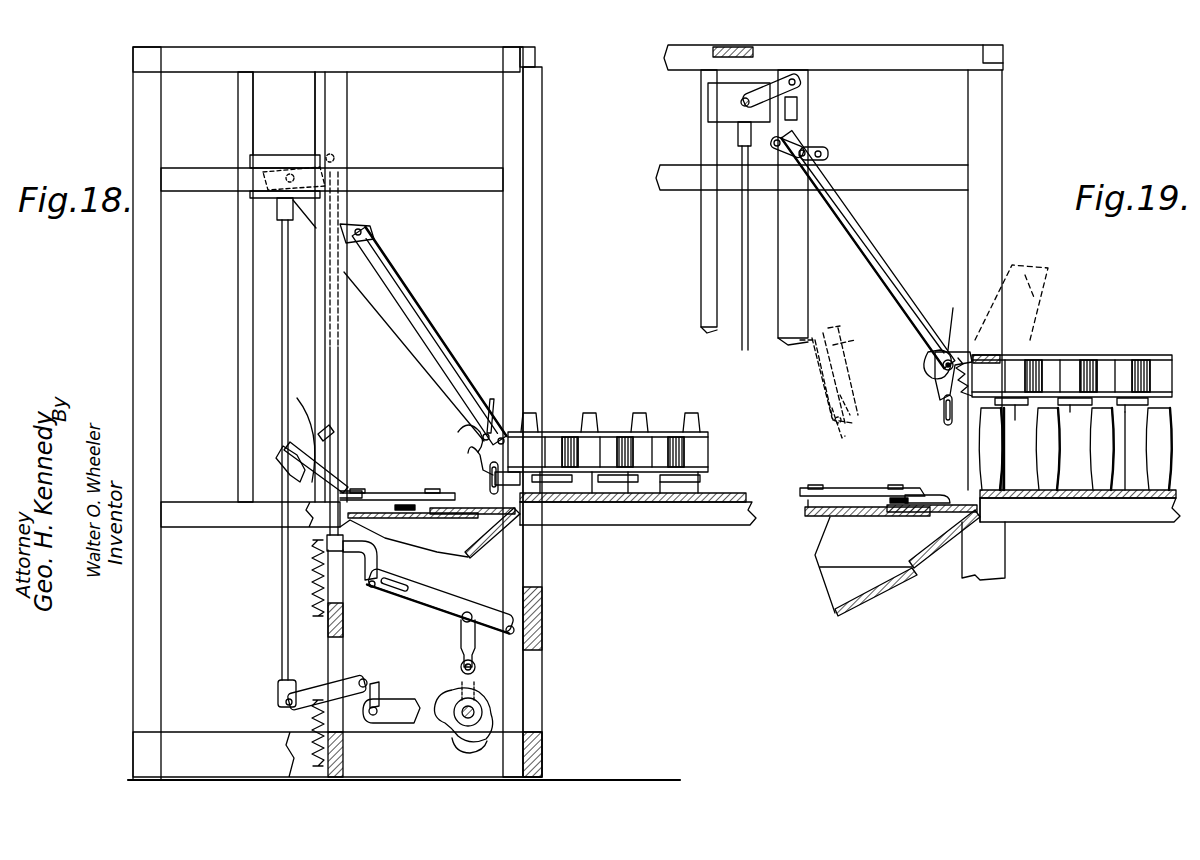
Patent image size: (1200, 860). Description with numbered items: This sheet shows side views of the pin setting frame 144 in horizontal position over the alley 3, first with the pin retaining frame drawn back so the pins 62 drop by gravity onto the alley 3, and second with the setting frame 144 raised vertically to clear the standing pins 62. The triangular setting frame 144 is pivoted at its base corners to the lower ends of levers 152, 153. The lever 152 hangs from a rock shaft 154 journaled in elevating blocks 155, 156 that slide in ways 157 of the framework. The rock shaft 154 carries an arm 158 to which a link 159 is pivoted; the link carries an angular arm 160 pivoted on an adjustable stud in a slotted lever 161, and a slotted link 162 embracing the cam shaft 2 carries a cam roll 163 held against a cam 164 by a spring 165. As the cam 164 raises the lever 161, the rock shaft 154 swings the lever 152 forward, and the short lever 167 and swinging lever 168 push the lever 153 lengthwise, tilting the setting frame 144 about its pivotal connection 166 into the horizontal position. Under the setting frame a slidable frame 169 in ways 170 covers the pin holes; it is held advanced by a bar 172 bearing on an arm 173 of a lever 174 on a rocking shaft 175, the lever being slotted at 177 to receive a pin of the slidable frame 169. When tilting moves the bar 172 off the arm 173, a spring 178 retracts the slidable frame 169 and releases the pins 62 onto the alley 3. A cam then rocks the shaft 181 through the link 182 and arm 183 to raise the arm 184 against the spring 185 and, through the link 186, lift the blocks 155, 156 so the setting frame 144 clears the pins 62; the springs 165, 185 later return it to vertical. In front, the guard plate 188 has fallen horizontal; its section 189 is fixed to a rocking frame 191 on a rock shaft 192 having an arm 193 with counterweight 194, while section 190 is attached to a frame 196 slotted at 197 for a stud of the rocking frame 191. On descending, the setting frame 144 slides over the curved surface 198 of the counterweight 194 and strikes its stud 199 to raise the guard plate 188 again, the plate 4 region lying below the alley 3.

In FIG. 18, the cam shaft 2 is at (482, 712).
In FIG. 18, the alley 3 is at (722, 495).
In FIG. 19, the alley 3 is at (1022, 490).
In FIG. 18, the chute plate 4 is at (478, 558).
In FIG. 19, the chute plate 4 is at (890, 580).
In FIG. 18, the pins 62 is at (594, 413).
In FIG. 19, the pins 62 is at (1060, 425).
In FIG. 18, the setting frame 144 is at (548, 431).
In FIG. 19, the setting frame 144 is at (1040, 285).
In FIG. 18, the lever 152 is at (392, 322).
In FIG. 19, the lever 152 is at (858, 268).
In FIG. 18, the lever 153 is at (432, 332).
In FIG. 19, the lever 153 is at (898, 232).
In FIG. 19, the rock shaft 154 is at (718, 112).
In FIG. 18, the elevating block 155 is at (258, 162).
In FIG. 19, the elevating block 156 is at (725, 85).
In FIG. 18, the ways 157 is at (316, 105).
In FIG. 19, the ways 157 is at (701, 240).
In FIG. 18, the arm 158 is at (338, 156).
In FIG. 19, the arm 158 is at (785, 85).
In FIG. 18, the link 159 is at (342, 212).
In FIG. 19, the link 159 is at (798, 114).
In FIG. 18, the angular arm 160 is at (372, 561).
In FIG. 18, the slotted lever 161 is at (432, 605).
In FIG. 18, the slotted link 162 is at (463, 645).
In FIG. 18, the cam roll 163 is at (461, 667).
In FIG. 18, the cam 164 is at (490, 690).
In FIG. 18, the spring 165 is at (312, 582).
In FIG. 18, the pivotal connection 166 is at (493, 400).
In FIG. 19, the pivotal connection 166 is at (840, 430).
In FIG. 19, the short lever 167 is at (830, 155).
In FIG. 19, the swinging lever 168 is at (808, 146).
In FIG. 18, the slidable frame 169 is at (660, 485).
In FIG. 19, the slidable frame 169 is at (1126, 420).
In FIG. 18, the ways 170 is at (612, 482).
In FIG. 19, the ways 170 is at (1015, 412).
In FIG. 19, the bar 172 is at (975, 352).
In FIG. 18, the arm 173 is at (465, 432).
In FIG. 19, the arm 173 is at (942, 378).
In FIG. 18, the lever 174 is at (468, 453).
In FIG. 19, the lever 174 is at (950, 400).
In FIG. 19, the rocking shaft 175 is at (950, 312).
In FIG. 19, the slot 177 is at (949, 425).
In FIG. 19, the spring 178 is at (985, 378).
In FIG. 18, the shaft 181 is at (366, 680).
In FIG. 18, the link 182 is at (395, 723).
In FIG. 18, the arm 183 is at (381, 692).
In FIG. 18, the arm 184 is at (312, 694).
In FIG. 18, the spring 185 is at (312, 718).
In FIG. 18, the link 186 is at (282, 637).
In FIG. 19, the link 186 is at (742, 278).
In FIG. 18, the guard plate 188 is at (442, 514).
In FIG. 19, the guard plate 188 is at (880, 515).
In FIG. 18, the section 189 is at (522, 512).
In FIG. 19, the section 189 is at (965, 525).
In FIG. 18, the section 190 is at (392, 518).
In FIG. 19, the section 190 is at (833, 520).
In FIG. 18, the rocking frame 191 is at (406, 490).
In FIG. 19, the rocking frame 191 is at (858, 486).
In FIG. 18, the rock shaft 192 is at (354, 490).
In FIG. 18, the arm 193 is at (305, 465).
In FIG. 18, the counterweight 194 is at (298, 437).
In FIG. 18, the frame 196 is at (395, 505).
In FIG. 19, the frame 196 is at (848, 506).
In FIG. 18, the slot 197 is at (490, 485).
In FIG. 19, the slot 197 is at (930, 494).
In FIG. 18, the curved surface 198 is at (303, 403).
In FIG. 18, the stud 199 is at (335, 427).